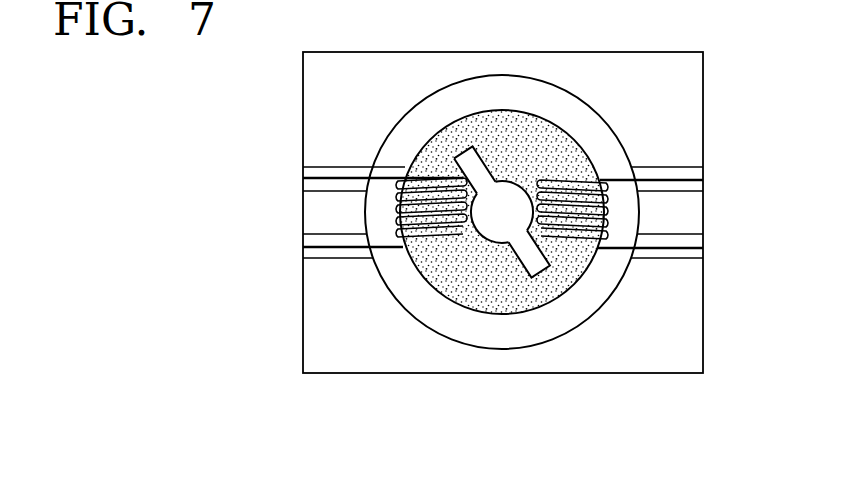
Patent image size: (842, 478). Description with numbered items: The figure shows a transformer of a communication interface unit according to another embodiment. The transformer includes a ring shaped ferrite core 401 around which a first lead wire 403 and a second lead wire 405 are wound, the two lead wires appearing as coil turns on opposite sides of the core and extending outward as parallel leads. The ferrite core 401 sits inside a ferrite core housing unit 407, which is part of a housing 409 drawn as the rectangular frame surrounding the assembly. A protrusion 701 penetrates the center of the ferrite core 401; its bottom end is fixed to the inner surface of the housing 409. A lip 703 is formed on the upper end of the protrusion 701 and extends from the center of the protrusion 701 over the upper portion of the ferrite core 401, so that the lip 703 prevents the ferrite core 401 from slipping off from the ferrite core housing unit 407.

The ferrite core 401 is at (498, 302).
The first lead wire 403 is at (336, 246).
The second lead wire 405 is at (678, 248).
The ferrite core housing unit 407 is at (610, 147).
The housing 409 is at (688, 73).
The protrusion 701 is at (493, 226).
The lip 703 is at (466, 158).